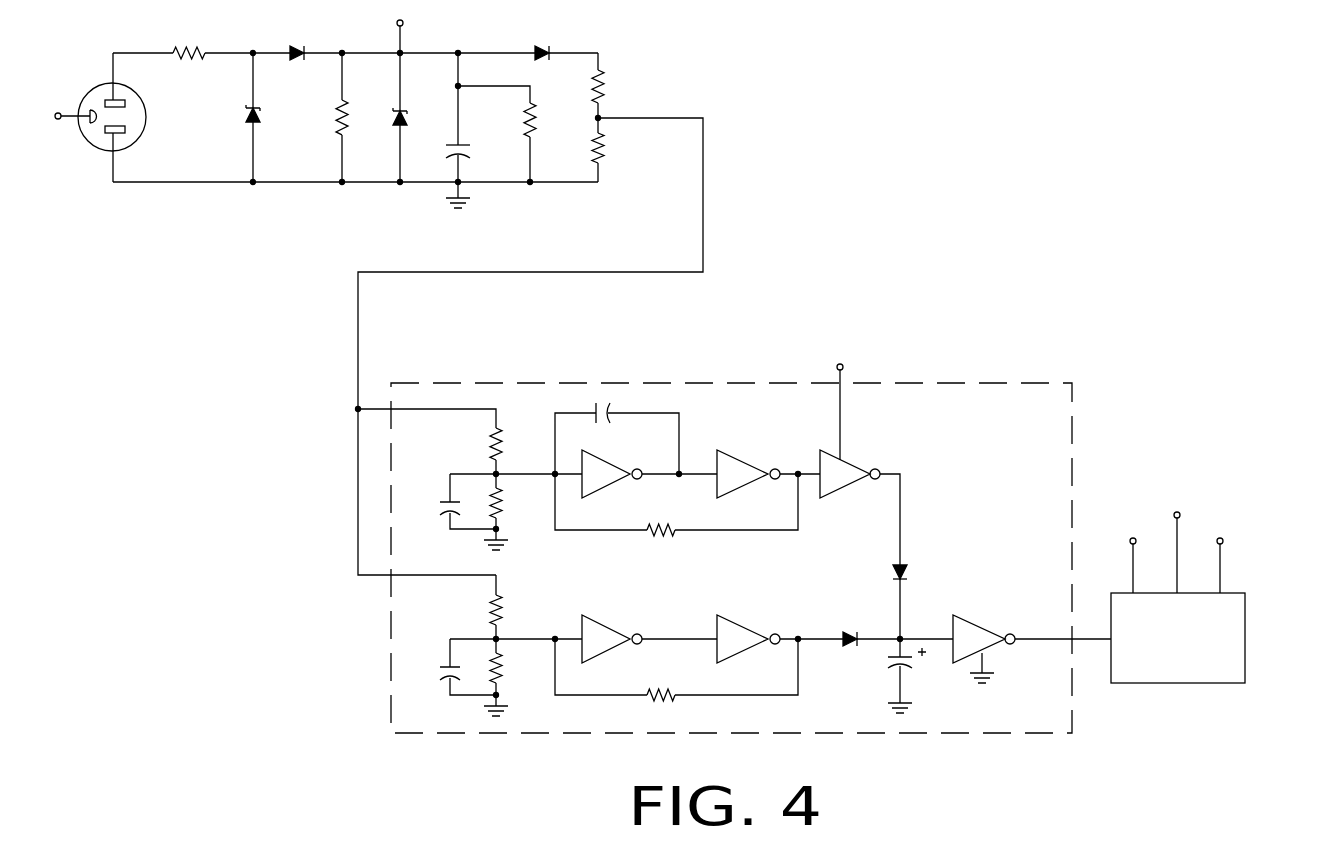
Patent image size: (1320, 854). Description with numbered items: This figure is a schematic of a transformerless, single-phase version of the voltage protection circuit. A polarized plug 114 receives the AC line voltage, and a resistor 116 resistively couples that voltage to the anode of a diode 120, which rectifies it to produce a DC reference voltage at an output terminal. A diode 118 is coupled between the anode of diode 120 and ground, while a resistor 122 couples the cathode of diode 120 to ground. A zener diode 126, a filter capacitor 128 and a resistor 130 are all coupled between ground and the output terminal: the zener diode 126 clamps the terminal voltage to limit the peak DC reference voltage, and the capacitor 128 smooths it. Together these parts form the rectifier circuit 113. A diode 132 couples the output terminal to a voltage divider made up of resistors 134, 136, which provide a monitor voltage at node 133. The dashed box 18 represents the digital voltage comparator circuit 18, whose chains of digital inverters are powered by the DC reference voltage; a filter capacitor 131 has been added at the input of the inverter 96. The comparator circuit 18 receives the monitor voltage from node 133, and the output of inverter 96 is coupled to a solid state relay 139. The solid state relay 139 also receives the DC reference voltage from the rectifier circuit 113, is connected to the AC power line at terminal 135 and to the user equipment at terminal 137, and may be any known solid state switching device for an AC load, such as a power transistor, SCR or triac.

The rectifier circuit 113 is at (307, 209).
The polarized plug 114 is at (98, 148).
The resistor 116 is at (193, 67).
The diode 118 is at (248, 117).
The diode 120 is at (294, 48).
The resistor 122 is at (338, 118).
The zener diode 126 is at (426, 112).
The filter capacitor 128 is at (492, 138).
The resistor 130 is at (560, 104).
The filter capacitor 131 is at (910, 668).
The diode 132 is at (540, 48).
The node 133 is at (596, 118).
The resistor 134 is at (604, 96).
The resistor 136 is at (604, 157).
The digital voltage comparator circuit 18 is at (553, 381).
The inverter 96 is at (972, 621).
The terminal 135 is at (1132, 535).
The terminal 137 is at (1224, 537).
The solid state relay 139 is at (1238, 592).